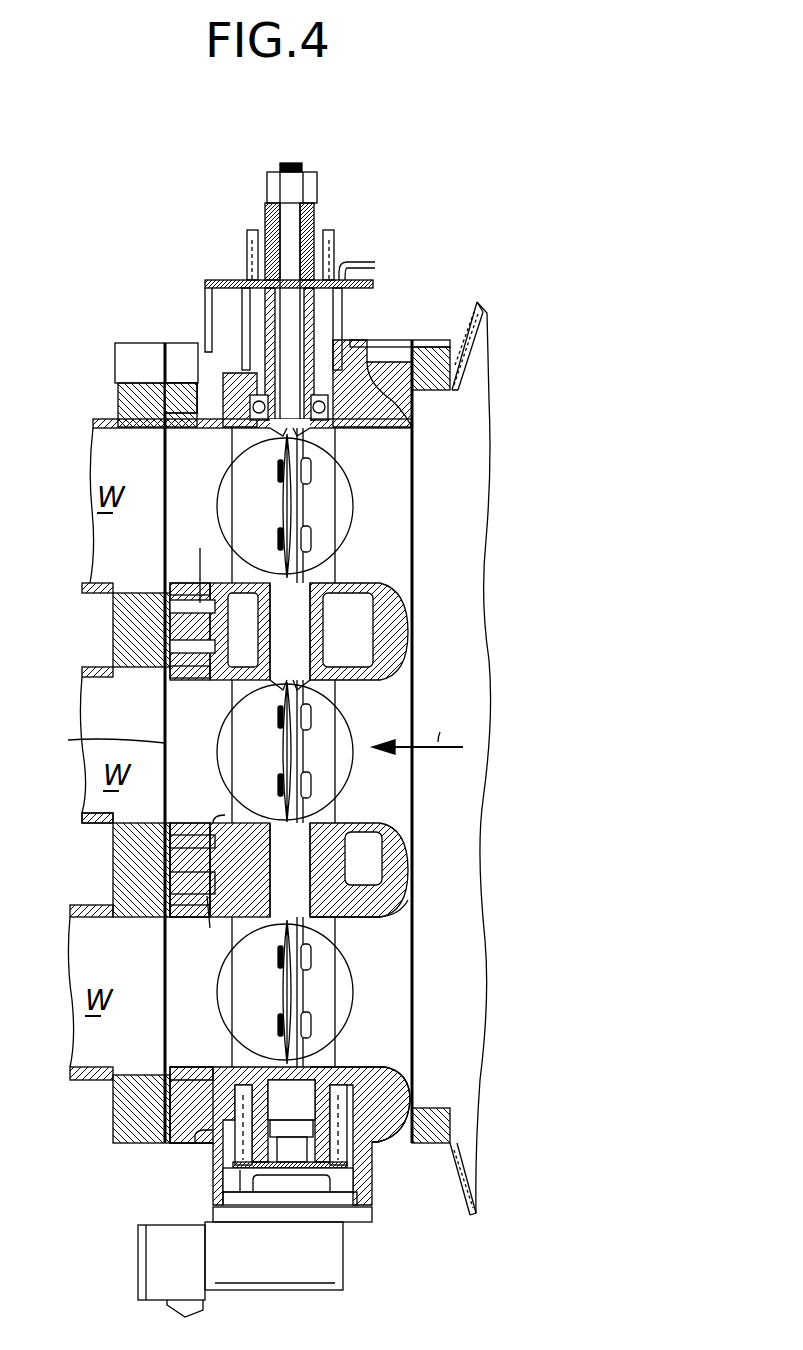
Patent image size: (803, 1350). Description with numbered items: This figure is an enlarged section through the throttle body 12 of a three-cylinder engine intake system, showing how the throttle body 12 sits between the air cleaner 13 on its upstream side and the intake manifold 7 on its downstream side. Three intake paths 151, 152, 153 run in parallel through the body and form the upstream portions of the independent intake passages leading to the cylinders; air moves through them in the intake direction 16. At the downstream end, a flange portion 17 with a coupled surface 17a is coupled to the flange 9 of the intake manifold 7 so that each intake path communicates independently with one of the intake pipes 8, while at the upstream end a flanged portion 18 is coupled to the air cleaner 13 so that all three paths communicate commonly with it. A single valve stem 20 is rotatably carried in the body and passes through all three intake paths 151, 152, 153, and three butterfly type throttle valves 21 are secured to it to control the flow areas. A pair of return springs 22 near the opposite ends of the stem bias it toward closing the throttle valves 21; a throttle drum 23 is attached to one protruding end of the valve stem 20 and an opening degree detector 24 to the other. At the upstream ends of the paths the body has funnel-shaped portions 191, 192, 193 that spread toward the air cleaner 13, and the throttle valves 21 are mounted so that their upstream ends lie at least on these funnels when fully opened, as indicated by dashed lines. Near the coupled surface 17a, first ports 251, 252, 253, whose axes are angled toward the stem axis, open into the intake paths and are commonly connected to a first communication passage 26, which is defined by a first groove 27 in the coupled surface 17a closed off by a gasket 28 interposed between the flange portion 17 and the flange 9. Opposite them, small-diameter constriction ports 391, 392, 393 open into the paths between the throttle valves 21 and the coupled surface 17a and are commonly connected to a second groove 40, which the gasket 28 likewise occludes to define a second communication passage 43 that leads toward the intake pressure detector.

The intake manifold 7 is at (169, 718).
The intake pipes 8 is at (102, 420).
The flange 9 is at (127, 1122).
The throttle body 12 is at (390, 344).
The air cleaner 13 is at (466, 1183).
The intake direction 16 is at (422, 731).
The flange portion 17 is at (182, 1142).
The coupled surface 17a is at (92, 738).
The flanged portion 18 is at (400, 1143).
The valve stem 20 is at (278, 683).
The throttle valves 21 is at (282, 500).
The return springs 22 is at (211, 284).
The throttle drum 23 is at (357, 262).
The opening degree detector 24 is at (292, 1271).
The first communication passage 26 is at (177, 645).
The first groove 27 is at (205, 743).
The gasket 28 is at (155, 823).
The second groove 40 is at (147, 383).
The second communication passage 43 is at (195, 1143).
The intake path 151 is at (313, 1055).
The intake path 152 is at (313, 800).
The intake path 153 is at (318, 562).
The funnel-shaped portion 191 is at (385, 912).
The funnel-shaped portion 192 is at (387, 830).
The funnel-shaped portion 193 is at (392, 415).
The first port 251 is at (193, 918).
The first port 252 is at (190, 677).
The first port 253 is at (193, 583).
The port 391 is at (187, 1067).
The port 392 is at (192, 823).
The port 393 is at (166, 427).